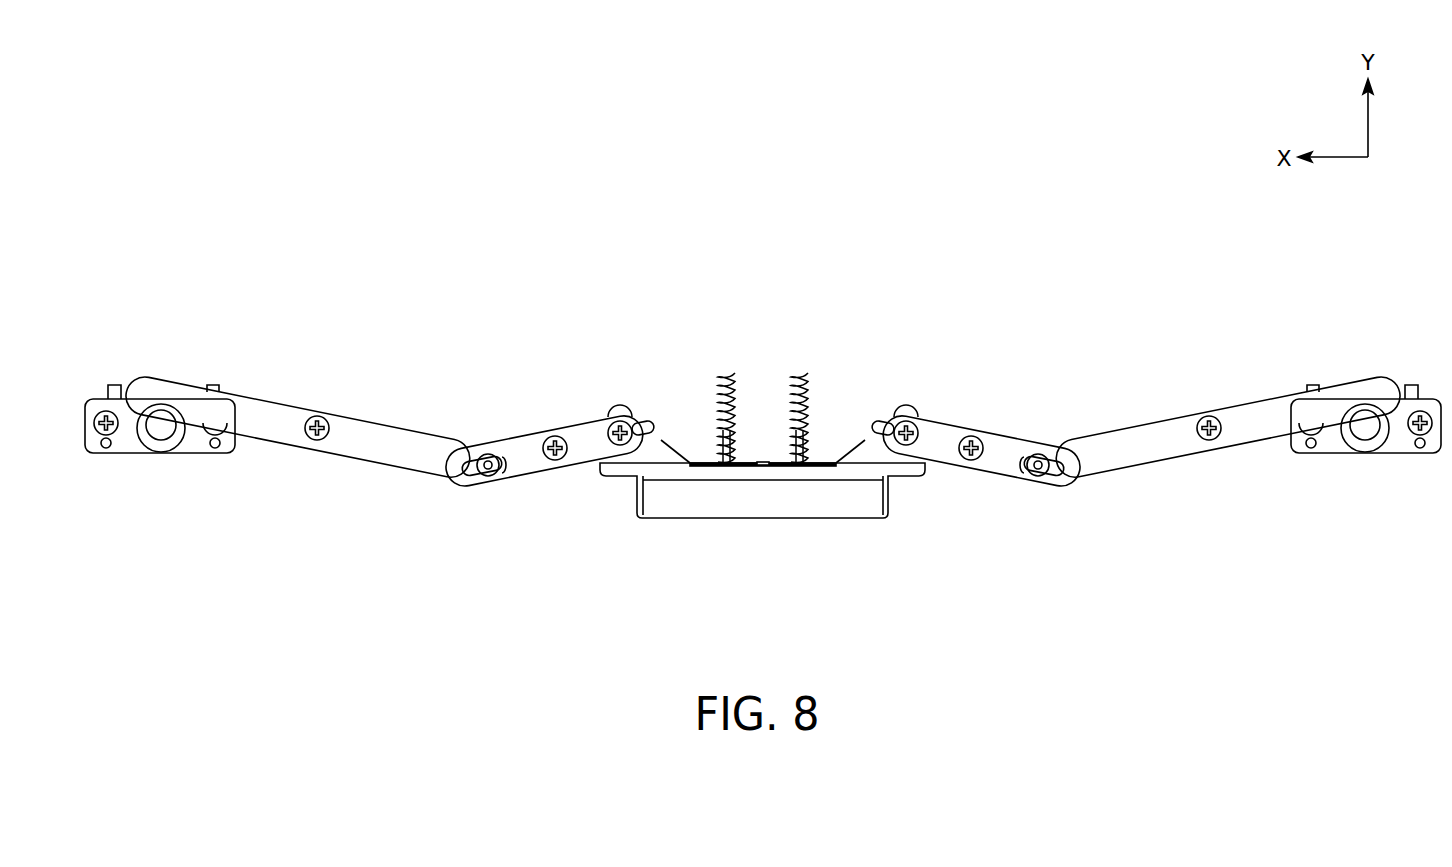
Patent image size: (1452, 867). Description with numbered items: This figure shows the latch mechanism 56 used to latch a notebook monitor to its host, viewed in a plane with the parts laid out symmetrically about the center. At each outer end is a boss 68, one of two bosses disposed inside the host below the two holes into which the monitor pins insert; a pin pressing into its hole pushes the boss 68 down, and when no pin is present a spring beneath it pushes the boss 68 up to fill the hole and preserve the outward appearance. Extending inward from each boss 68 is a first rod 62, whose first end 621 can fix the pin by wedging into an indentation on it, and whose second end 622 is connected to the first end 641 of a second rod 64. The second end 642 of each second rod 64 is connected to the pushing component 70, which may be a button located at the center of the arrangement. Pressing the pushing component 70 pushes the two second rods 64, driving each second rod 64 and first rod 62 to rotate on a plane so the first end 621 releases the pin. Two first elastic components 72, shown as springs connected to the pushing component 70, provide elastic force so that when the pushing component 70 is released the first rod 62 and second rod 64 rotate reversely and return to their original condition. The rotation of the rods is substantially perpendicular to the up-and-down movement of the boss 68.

The latch mechanism 56 is at (780, 175).
The first rod 62 is at (233, 293).
The first end 621 is at (153, 390).
The second end 622 is at (477, 440).
The second rod 64 is at (478, 335).
The first end 641 is at (477, 448).
The second end 642 is at (640, 410).
The boss 68 is at (163, 432).
The pushing component 70 is at (774, 519).
The first elastic component 72 is at (727, 372).